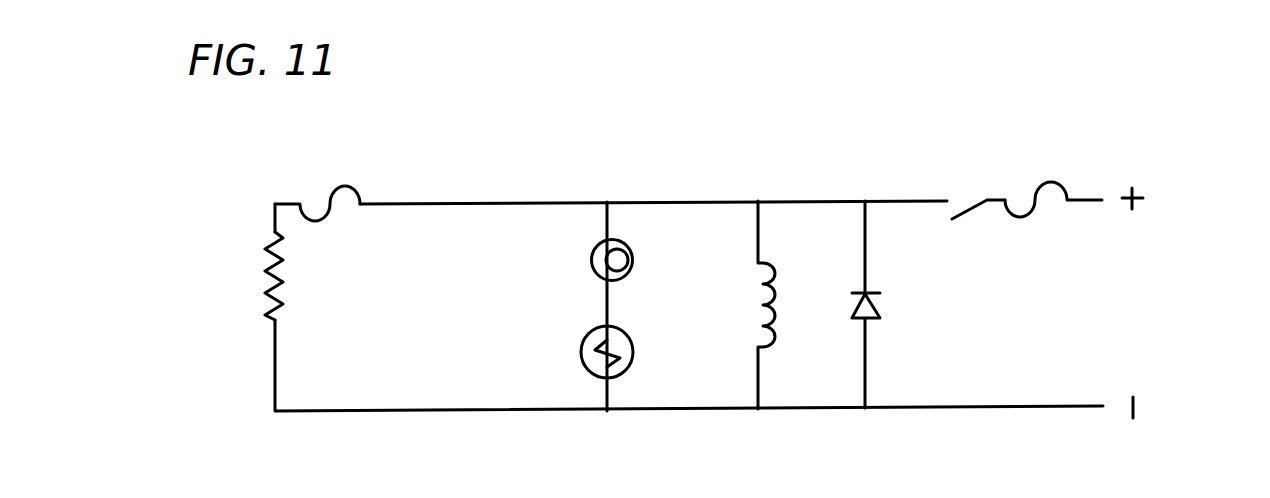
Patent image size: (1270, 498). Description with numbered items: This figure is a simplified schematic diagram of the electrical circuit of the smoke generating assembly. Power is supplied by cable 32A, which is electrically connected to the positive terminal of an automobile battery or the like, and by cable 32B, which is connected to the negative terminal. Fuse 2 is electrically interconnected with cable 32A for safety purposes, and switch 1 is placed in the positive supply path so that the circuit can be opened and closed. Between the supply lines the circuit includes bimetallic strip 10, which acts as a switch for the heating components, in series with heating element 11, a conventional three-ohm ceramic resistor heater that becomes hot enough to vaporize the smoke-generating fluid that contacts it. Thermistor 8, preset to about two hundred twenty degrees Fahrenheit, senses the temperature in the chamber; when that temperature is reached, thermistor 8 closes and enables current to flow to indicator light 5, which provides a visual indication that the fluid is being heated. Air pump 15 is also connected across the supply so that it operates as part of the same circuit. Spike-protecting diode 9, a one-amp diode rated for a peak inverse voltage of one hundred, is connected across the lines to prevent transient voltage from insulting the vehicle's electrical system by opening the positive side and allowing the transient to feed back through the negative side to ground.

The switch 1 is at (960, 202).
The fuse 2 is at (1013, 218).
The indicator light 5 is at (589, 257).
The thermistor 8 is at (581, 352).
The spike-protecting diode 9 is at (880, 307).
The bimetallic strip 10 is at (361, 192).
The heating element 11 is at (268, 272).
The air pump 15 is at (773, 265).
The cable 32A is at (1142, 197).
The cable 32B is at (1142, 407).